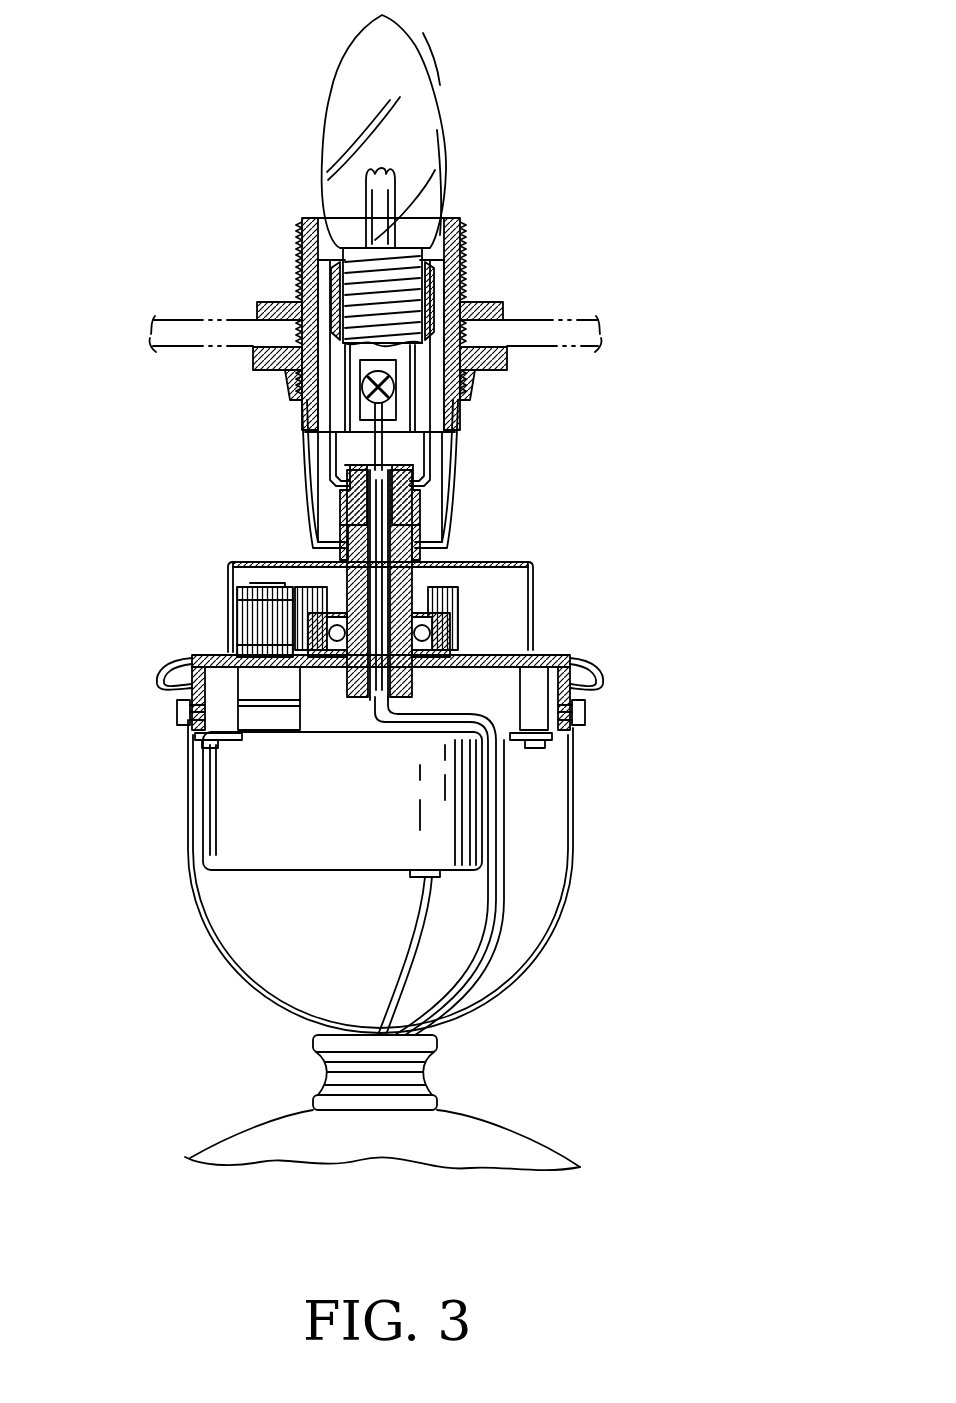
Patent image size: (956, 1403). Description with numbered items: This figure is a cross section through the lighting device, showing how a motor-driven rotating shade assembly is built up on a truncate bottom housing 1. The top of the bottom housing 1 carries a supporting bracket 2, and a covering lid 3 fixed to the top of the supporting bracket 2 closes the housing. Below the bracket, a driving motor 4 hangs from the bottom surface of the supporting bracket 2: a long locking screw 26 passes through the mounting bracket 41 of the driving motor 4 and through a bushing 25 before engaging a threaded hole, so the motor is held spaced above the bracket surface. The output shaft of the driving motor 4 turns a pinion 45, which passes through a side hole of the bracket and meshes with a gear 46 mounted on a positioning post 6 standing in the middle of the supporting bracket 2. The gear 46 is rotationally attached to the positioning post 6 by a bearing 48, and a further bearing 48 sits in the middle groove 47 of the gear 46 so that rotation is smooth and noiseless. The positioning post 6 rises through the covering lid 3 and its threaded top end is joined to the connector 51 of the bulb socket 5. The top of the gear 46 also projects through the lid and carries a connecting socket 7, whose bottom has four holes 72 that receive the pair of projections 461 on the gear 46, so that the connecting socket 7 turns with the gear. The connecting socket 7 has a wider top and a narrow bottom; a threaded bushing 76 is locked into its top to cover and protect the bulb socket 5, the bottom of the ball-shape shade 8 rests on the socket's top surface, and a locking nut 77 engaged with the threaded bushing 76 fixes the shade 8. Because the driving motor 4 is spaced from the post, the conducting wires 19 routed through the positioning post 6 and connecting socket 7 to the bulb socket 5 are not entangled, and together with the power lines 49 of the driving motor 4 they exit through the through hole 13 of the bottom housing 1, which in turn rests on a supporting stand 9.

The bottom housing 1 is at (575, 888).
The supporting bracket 2 is at (582, 712).
The covering lid 3 is at (535, 588).
The driving motor 4 is at (192, 850).
The bulb socket 5 is at (352, 62).
The positioning post 6 is at (420, 516).
The connecting socket 7 is at (455, 490).
The ball-shape shade 8 is at (548, 305).
The supporting stand 9 is at (465, 1152).
The through hole 13 is at (395, 1036).
The conducting wires 19 is at (342, 566).
The bushing 25 is at (193, 684).
The long locking screw 26 is at (215, 746).
The mounting bracket 41 is at (172, 720).
The pinion 45 is at (268, 618).
The gear 46 is at (450, 644).
The middle groove 47 is at (432, 632).
The bearing 48 is at (592, 662).
The power lines 49 is at (378, 972).
The connector 51 is at (340, 512).
The holes 72 is at (340, 520).
The threaded bushing 76 is at (455, 226).
The locking nut 77 is at (462, 282).
The projections 461 is at (430, 548).